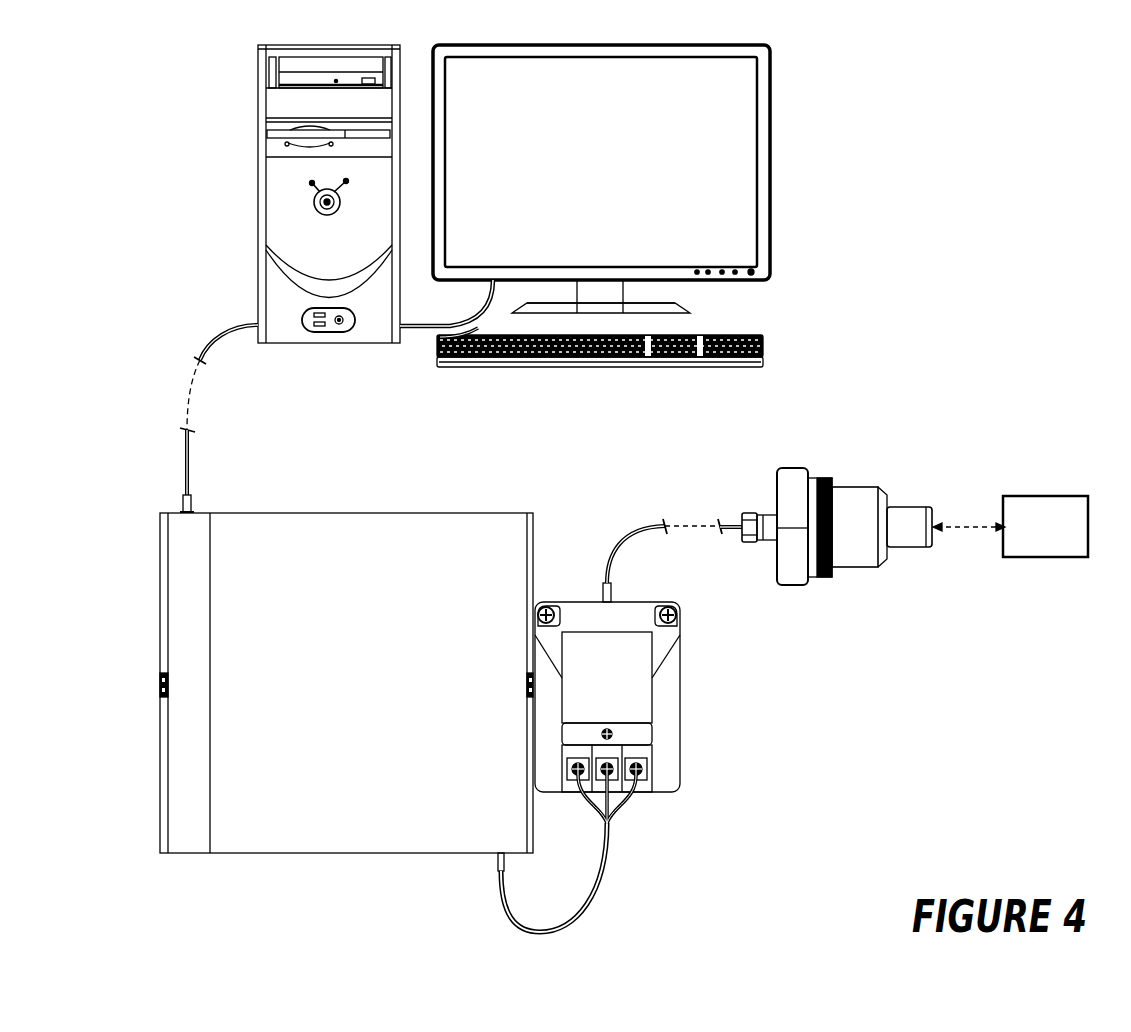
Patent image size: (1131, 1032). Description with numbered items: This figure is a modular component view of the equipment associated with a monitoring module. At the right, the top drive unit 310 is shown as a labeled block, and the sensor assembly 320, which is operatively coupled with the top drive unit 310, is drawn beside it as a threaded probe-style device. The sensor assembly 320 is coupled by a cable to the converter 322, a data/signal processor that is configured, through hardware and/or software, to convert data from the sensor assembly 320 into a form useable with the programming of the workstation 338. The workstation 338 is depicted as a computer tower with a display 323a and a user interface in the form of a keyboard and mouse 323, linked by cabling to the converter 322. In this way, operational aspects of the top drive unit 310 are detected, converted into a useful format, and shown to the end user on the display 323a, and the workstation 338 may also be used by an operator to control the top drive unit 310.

The workstation 338 is at (185, 55).
The display 323a is at (770, 144).
The keyboard and mouse 323 is at (765, 353).
The converter 322 is at (681, 694).
The sensor assembly 320 is at (862, 568).
The top drive unit 310 is at (1029, 540).